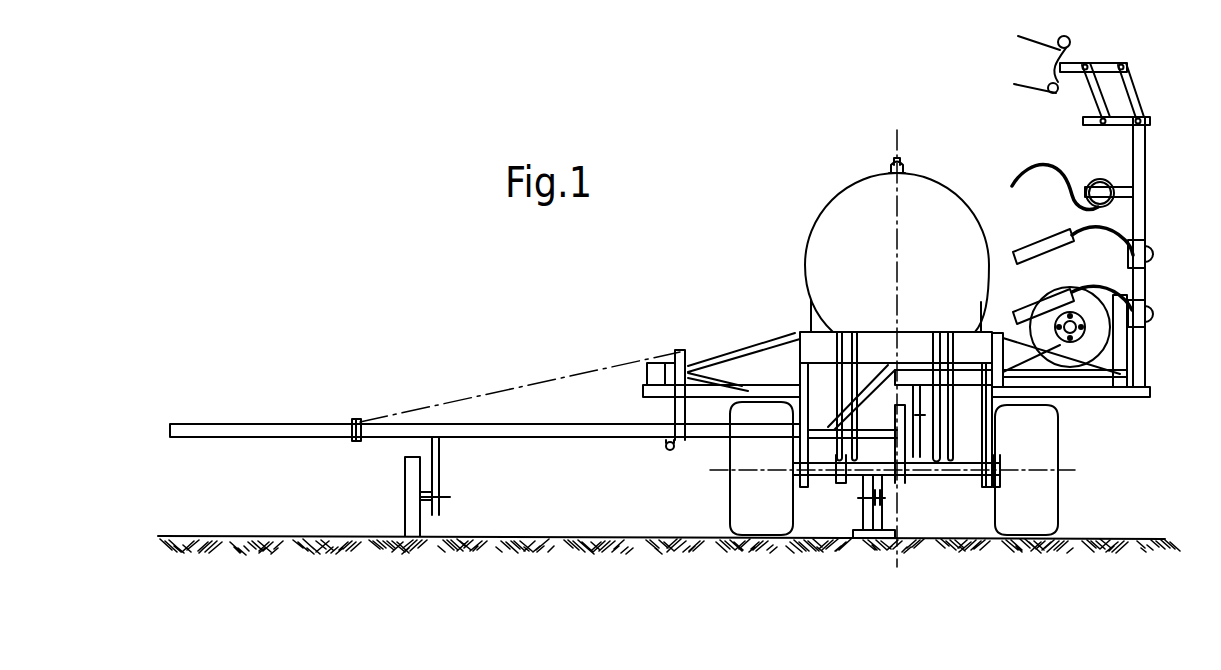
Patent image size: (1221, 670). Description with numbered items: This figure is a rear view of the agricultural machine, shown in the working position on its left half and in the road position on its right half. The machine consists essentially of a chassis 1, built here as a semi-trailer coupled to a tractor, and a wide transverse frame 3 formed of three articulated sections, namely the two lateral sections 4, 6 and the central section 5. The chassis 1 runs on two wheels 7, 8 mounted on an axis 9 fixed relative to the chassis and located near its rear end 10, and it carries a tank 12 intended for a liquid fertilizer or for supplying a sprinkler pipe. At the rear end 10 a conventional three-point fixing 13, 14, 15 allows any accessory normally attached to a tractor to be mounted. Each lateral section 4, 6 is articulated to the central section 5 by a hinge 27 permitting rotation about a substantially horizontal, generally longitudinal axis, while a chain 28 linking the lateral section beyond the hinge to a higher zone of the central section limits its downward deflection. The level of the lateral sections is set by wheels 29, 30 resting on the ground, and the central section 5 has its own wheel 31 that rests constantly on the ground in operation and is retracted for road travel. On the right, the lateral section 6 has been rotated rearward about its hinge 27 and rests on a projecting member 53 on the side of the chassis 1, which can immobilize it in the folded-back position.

The chassis 1 is at (748, 340).
The transverse frame 3 is at (482, 418).
The lateral section 4 is at (388, 427).
The central section 5 is at (1097, 385).
The lateral section 6 is at (1145, 220).
The wheel 7 is at (744, 511).
The wheel 8 is at (1050, 514).
The axis 9 is at (1062, 472).
The rear end 10 is at (793, 338).
The tank 12 is at (922, 204).
The 3-point fixing 13 is at (832, 466).
The 3-point fixing 14 is at (906, 345).
The 3-point fixing 15 is at (950, 462).
The hinge 27 is at (668, 452).
The chain 28 is at (516, 386).
The wheel 29 is at (410, 476).
The wheel 30 is at (1058, 294).
The wheel 31 is at (900, 500).
The projecting member 53 is at (1075, 392).